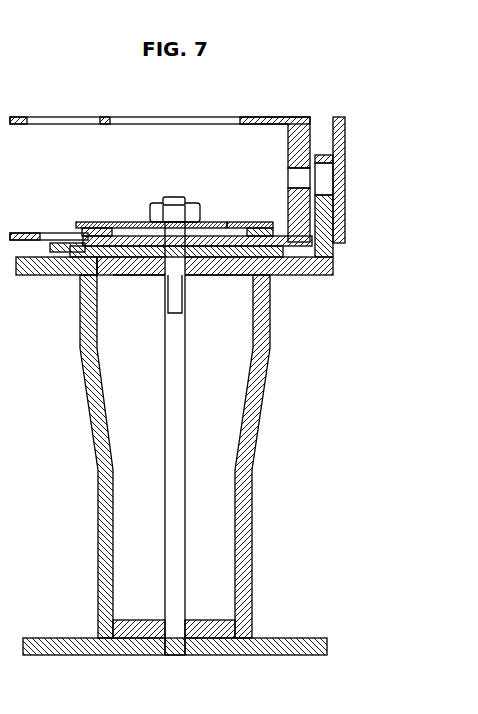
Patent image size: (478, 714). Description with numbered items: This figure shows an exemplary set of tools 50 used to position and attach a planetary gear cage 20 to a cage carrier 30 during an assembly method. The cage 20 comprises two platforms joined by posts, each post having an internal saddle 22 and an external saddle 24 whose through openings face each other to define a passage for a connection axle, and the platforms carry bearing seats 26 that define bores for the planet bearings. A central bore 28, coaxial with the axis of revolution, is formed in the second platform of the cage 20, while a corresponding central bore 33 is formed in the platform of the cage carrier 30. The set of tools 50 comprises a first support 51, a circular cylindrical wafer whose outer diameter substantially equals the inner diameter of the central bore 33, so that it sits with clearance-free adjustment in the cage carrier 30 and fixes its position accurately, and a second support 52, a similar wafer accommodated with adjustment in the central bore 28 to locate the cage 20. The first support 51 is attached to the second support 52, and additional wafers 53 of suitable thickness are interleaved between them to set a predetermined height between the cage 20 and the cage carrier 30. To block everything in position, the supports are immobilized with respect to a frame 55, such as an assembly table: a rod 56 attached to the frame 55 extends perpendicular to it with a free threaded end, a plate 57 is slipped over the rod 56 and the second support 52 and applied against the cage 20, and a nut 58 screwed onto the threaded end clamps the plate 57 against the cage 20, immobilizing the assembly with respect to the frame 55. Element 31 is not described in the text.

The cage 20 is at (22, 117).
The internal saddle 22 is at (290, 152).
The external saddle 24 is at (345, 141).
The bearing seat 26 is at (112, 111).
The central bore 28 is at (114, 236).
The cage carrier 30 is at (50, 275).
The fastener 31 is at (320, 155).
The central bore 33 is at (106, 270).
The set of tools 50 is at (396, 286).
The first support 51 is at (228, 275).
The second support 52 is at (230, 226).
The additional wafers 53 is at (72, 243).
The frame 55 is at (282, 640).
The rod 56 is at (175, 442).
The plate 57 is at (106, 228).
The nut 58 is at (202, 212).